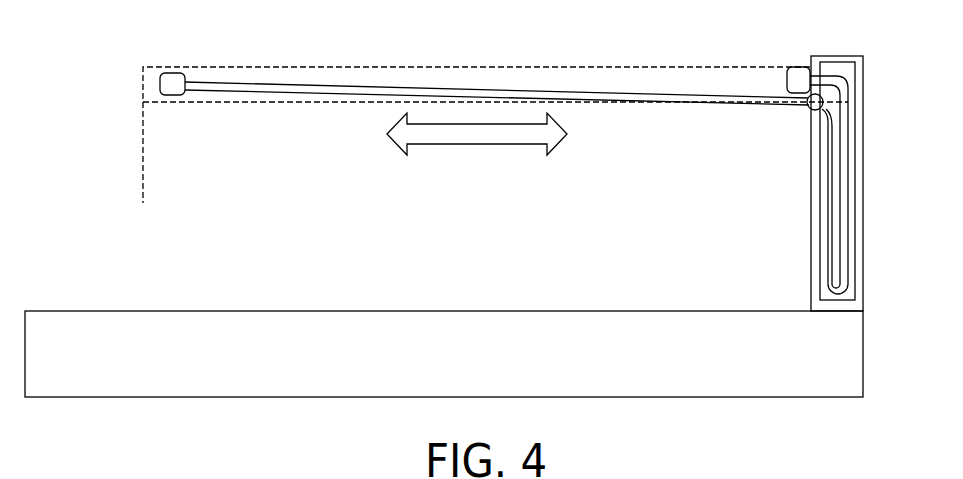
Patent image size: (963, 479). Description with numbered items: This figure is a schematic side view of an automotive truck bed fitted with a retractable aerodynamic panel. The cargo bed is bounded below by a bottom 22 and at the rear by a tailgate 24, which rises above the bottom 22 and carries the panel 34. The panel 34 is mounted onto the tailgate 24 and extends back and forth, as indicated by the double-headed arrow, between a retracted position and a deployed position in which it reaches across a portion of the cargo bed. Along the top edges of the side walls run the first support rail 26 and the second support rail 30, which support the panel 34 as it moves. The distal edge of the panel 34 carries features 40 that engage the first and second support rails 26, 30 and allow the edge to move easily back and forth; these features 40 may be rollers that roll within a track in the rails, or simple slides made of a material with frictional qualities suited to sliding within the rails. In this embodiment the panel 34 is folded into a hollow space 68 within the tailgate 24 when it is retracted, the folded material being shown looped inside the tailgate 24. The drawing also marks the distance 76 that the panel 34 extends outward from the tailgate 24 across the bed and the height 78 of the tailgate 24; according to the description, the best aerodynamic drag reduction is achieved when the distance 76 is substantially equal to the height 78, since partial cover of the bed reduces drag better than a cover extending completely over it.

The bottom 22 is at (227, 318).
The tailgate 24 is at (863, 258).
The first support rail 26 is at (495, 113).
The second support rail 30 is at (687, 67).
The panel 34 is at (357, 87).
The features 40 is at (178, 73).
The hollow space 68 is at (838, 175).
The distance 76 is at (811, 197).
The height 78 is at (870, 56).